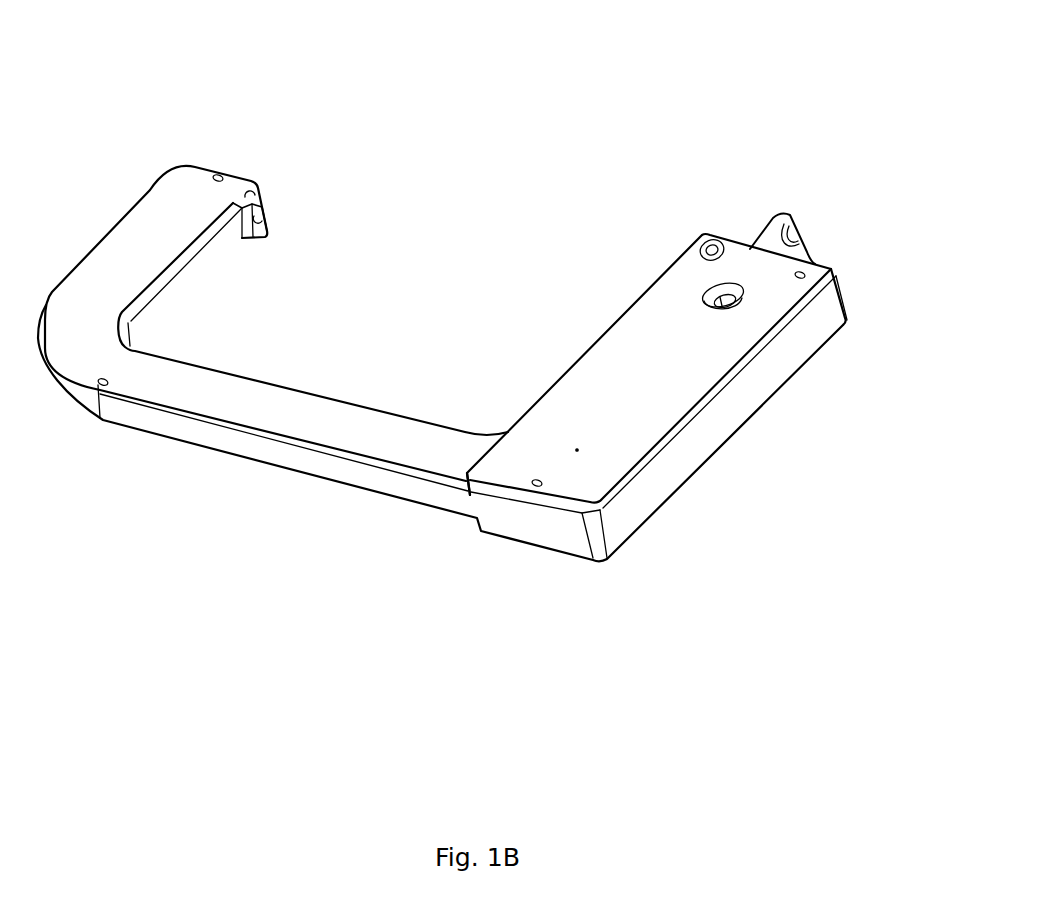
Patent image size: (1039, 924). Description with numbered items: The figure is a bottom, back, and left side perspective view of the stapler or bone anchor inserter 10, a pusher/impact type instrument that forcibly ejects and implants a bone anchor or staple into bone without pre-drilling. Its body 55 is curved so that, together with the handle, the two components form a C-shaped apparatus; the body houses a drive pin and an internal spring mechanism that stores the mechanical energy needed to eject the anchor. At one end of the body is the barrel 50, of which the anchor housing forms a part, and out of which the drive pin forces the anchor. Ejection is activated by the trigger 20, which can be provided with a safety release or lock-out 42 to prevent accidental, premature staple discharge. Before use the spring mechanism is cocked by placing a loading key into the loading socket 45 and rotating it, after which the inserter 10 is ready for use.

The bone anchor inserter 10 is at (477, 346).
The trigger 20 is at (790, 213).
The safety release or lock-out 42 is at (830, 267).
The loading socket 45 is at (736, 308).
The barrel 50 is at (268, 195).
The body 55 is at (291, 412).